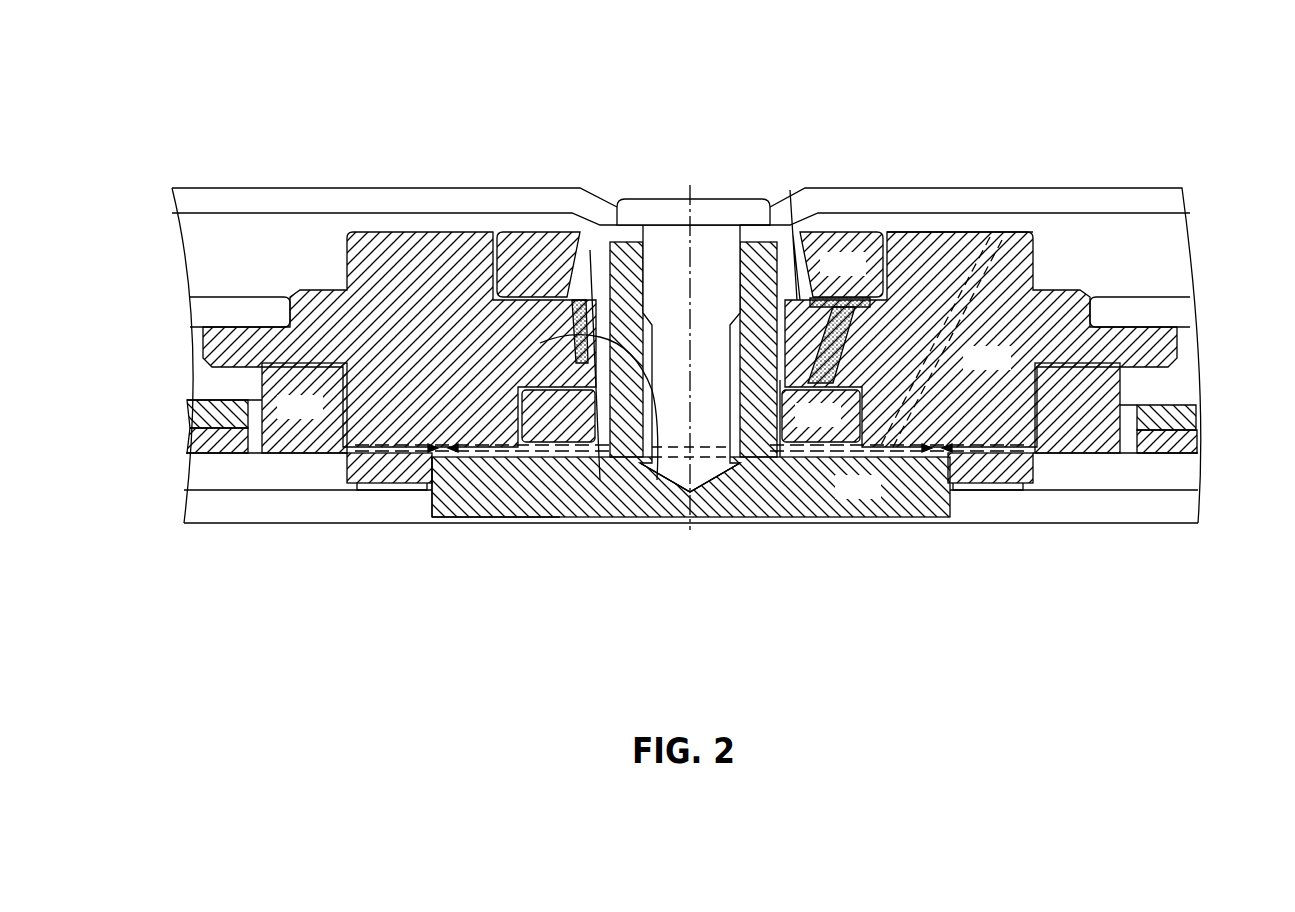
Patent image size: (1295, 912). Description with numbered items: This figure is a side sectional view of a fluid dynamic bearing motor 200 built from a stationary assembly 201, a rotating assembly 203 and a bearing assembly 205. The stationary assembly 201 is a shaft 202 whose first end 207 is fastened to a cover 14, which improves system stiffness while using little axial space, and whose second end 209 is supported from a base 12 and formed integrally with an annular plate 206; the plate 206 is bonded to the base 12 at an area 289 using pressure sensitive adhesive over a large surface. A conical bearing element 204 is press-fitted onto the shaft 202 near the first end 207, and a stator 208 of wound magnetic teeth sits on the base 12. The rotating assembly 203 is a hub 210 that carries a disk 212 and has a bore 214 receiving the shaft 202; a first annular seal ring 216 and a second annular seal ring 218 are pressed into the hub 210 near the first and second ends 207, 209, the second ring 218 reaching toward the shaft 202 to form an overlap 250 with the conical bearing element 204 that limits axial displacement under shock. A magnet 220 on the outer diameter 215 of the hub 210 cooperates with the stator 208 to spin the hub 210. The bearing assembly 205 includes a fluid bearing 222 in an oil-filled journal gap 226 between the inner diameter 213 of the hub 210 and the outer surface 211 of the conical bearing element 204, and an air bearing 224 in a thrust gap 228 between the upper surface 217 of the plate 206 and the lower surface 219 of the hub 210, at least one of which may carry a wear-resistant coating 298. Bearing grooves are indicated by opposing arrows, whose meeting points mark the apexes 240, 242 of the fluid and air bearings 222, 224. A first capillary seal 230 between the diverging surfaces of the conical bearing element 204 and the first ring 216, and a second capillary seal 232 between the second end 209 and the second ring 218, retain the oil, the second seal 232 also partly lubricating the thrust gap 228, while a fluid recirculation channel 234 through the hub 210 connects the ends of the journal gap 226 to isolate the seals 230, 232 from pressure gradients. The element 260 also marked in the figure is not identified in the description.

The base 12 is at (1157, 512).
The cover 14 is at (1155, 205).
The fluid dynamic bearing motor 200 is at (345, 148).
The stationary assembly 201 is at (722, 180).
The shaft 202 is at (755, 458).
The rotating assembly 203 is at (1025, 228).
The conical bearing element 204 is at (768, 205).
The bearing assembly 205 is at (790, 190).
The annular plate 206 is at (837, 500).
The first end 207 is at (738, 215).
The stator 208 is at (1185, 410).
The second end 209 is at (745, 470).
The hub 210 is at (967, 370).
The outer surface 211 is at (643, 265).
The disk 212 is at (1117, 325).
The inner diameter 213 is at (818, 290).
The bore 214 is at (660, 265).
The outer diameter 215 is at (1037, 423).
The first annular seal ring 216 is at (823, 275).
The upper surface 217 is at (478, 520).
The second annular seal ring 218 is at (798, 426).
The lower surface 219 is at (478, 380).
The magnet 220 is at (280, 418).
The fluid bearing 222 is at (658, 470).
The air bearing 224 is at (436, 465).
The journal gap 226 is at (633, 458).
The thrust gap 228 is at (362, 522).
The first capillary seal 230 is at (590, 250).
The second capillary seal 232 is at (790, 458).
The fluid recirculation channel 234 is at (922, 280).
The apex of fluid bearing 240 is at (540, 232).
The apex of air bearing 242 is at (187, 448).
The overlap 250 is at (600, 420).
The passage 260 is at (997, 232).
The area 289 is at (1015, 520).
The wear-resistant coating 298 is at (528, 520).